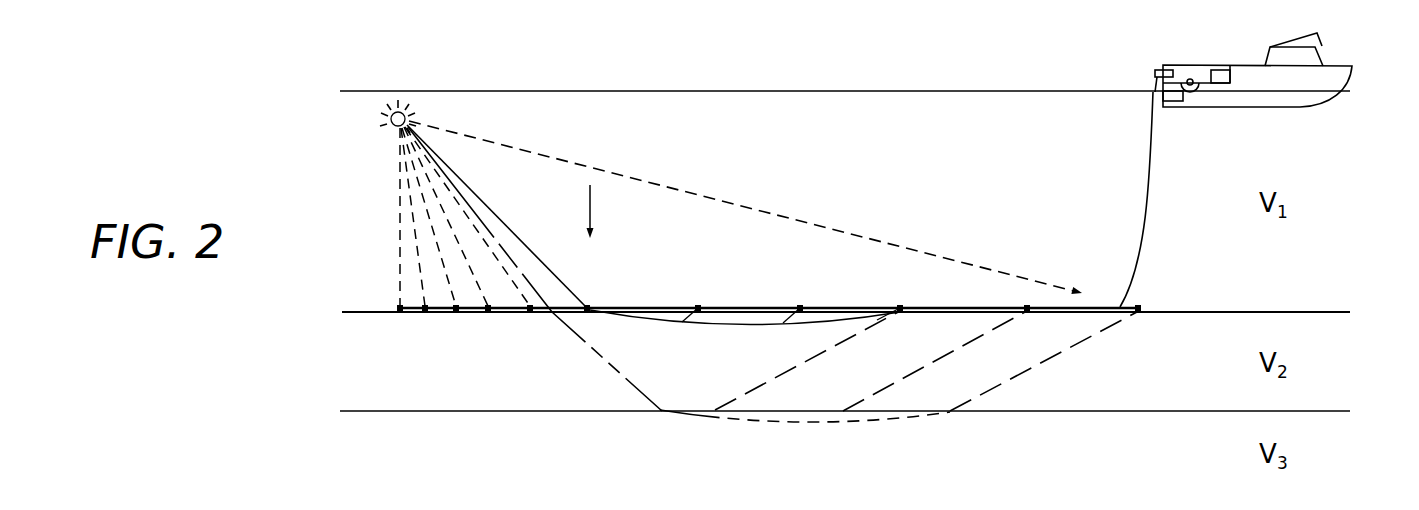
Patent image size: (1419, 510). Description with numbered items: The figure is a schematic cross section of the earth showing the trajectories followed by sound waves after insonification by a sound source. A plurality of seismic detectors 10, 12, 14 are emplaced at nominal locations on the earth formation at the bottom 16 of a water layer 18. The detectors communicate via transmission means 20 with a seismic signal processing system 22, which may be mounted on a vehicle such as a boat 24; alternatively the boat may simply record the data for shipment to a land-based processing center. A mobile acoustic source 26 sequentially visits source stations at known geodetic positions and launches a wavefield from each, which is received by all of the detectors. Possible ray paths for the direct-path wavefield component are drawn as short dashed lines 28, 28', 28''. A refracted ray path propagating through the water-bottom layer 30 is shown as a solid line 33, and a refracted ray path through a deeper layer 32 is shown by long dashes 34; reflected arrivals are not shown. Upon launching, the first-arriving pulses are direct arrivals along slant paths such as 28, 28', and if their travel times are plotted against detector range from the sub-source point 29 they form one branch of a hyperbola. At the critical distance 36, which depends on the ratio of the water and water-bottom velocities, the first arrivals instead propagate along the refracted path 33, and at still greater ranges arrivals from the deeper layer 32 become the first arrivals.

The seismic detector 10 is at (588, 306).
The seismic detector 12 is at (699, 306).
The seismic detector 14 is at (1138, 308).
The bottom of water layer 16 is at (1288, 310).
The water layer 18 is at (1222, 217).
The transmission means 20 is at (1146, 180).
The seismic signal processing system 22 is at (1218, 68).
The boat 24 is at (1352, 62).
The mobile acoustic source 26 is at (385, 131).
The direct-path ray path 28 is at (431, 216).
The direct-path ray path 28' is at (534, 268).
The direct-path ray path 28'' is at (745, 207).
The sub-source point 29 is at (383, 296).
The water-bottom layer 30 is at (1222, 378).
The deeper layer 32 is at (1222, 468).
The refracted ray path 33 is at (733, 326).
The refracted ray path 34 is at (808, 425).
The critical distance 36 is at (592, 200).